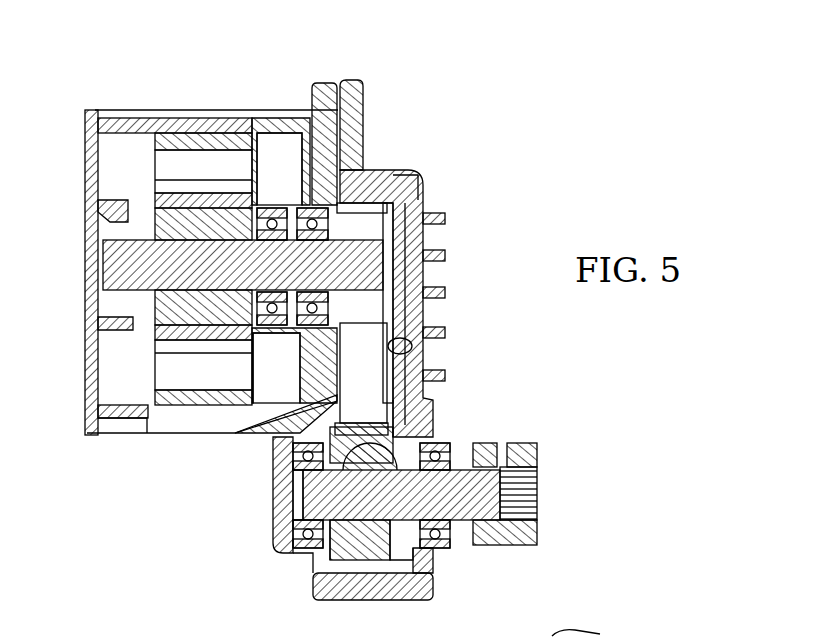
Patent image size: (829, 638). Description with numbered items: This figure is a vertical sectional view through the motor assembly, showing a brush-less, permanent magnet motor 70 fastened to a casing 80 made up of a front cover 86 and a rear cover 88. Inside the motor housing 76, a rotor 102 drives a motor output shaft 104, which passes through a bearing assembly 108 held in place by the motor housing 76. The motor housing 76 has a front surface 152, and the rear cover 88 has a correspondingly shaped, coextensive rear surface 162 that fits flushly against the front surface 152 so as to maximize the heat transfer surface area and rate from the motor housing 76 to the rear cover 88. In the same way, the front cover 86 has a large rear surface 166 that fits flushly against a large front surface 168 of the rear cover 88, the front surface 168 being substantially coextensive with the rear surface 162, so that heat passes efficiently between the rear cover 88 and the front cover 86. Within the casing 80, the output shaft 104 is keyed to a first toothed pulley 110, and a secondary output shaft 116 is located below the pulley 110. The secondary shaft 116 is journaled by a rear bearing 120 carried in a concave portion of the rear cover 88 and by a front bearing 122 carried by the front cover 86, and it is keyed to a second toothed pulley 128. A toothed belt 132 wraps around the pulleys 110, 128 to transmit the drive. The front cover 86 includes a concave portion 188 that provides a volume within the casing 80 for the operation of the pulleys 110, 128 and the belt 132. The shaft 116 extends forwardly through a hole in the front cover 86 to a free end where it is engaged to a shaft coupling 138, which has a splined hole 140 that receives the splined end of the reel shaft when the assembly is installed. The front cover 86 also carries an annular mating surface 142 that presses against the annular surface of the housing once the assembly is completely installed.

The motor 70 is at (150, 115).
The rotor 102 is at (148, 192).
The motor output shaft 104 is at (365, 270).
The motor housing 76 is at (284, 112).
The rear cover 88 is at (325, 90).
The rear surface 166 is at (339, 95).
The casing 80 is at (430, 170).
The first toothed pulley 110 is at (403, 170).
The front cover 86 is at (446, 332).
The front surface 168 is at (368, 198).
The concave portion 188 is at (412, 352).
The toothed belt 132 is at (378, 396).
The second toothed pulley 128 is at (388, 406).
The bearing assembly 108 is at (282, 198).
The rear surface 162 is at (292, 200).
The front surface 152 is at (292, 424).
The rear bearing 120 is at (306, 555).
The annular mating surface 142 is at (460, 441).
The secondary output shaft 116 is at (464, 522).
The front bearing 122 is at (480, 442).
The splined hole 140 is at (537, 486).
The shaft coupling 138 is at (537, 531).